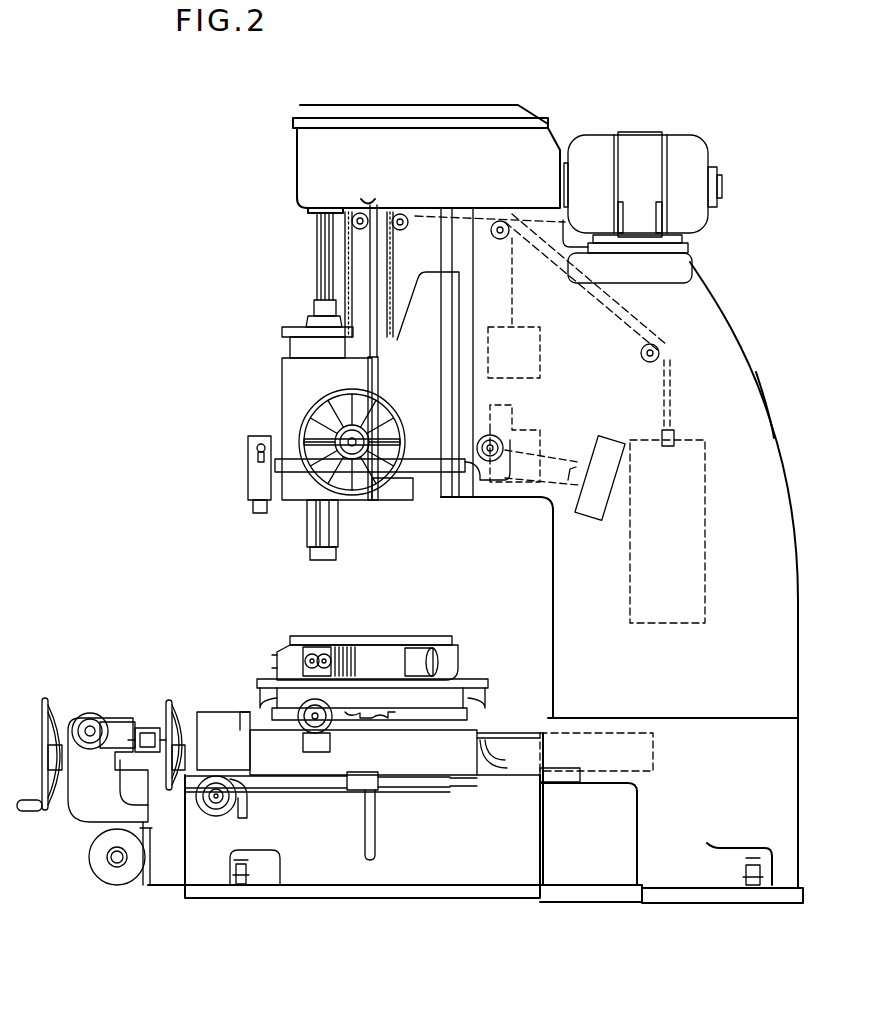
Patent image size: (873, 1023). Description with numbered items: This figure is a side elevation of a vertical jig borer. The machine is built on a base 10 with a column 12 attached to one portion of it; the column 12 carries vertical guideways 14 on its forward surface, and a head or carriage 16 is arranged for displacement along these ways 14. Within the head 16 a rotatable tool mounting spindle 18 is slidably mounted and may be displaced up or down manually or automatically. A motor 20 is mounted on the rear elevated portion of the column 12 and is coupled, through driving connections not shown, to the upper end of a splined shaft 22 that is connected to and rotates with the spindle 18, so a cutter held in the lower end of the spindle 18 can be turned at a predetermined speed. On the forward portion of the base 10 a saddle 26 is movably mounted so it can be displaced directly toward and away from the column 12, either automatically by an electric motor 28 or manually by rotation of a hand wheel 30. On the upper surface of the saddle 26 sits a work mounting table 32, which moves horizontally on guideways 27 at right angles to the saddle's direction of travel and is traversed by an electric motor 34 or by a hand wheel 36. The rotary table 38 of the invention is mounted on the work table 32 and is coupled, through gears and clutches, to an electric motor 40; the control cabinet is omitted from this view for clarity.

The base 10 is at (452, 867).
The column 12 is at (565, 575).
The vertical guideways 14 is at (440, 506).
The head 16 is at (298, 377).
The spindle 18 is at (315, 525).
The motor 20 is at (693, 148).
The splined shaft 22 is at (318, 256).
The saddle 26 is at (462, 770).
The guideways 27 is at (292, 728).
The electric motor 28 is at (108, 866).
The hand wheel 30 is at (48, 702).
The work mounting table 32 is at (440, 694).
The electric motor 34 is at (213, 820).
The hand wheel 36 is at (172, 702).
The rotary table 38 is at (389, 619).
The electric motor 40 is at (430, 650).